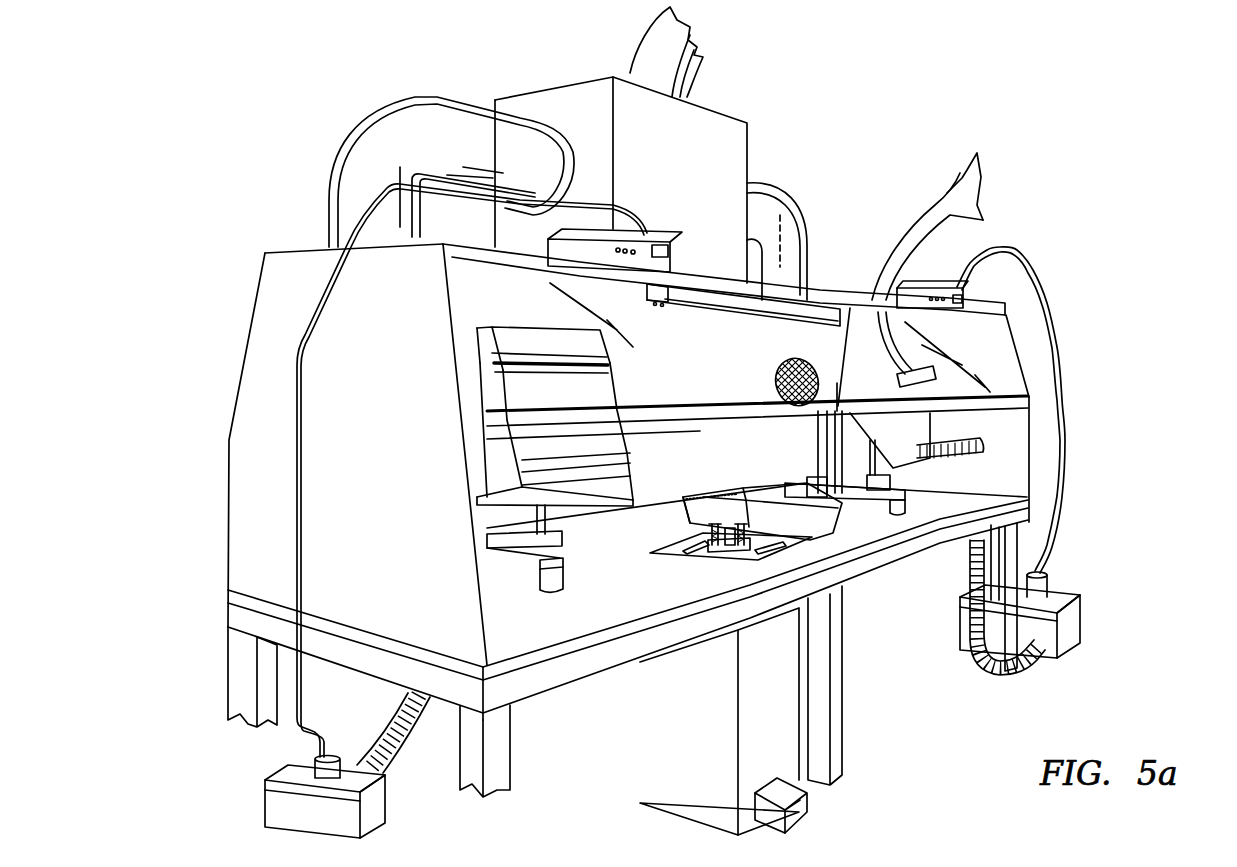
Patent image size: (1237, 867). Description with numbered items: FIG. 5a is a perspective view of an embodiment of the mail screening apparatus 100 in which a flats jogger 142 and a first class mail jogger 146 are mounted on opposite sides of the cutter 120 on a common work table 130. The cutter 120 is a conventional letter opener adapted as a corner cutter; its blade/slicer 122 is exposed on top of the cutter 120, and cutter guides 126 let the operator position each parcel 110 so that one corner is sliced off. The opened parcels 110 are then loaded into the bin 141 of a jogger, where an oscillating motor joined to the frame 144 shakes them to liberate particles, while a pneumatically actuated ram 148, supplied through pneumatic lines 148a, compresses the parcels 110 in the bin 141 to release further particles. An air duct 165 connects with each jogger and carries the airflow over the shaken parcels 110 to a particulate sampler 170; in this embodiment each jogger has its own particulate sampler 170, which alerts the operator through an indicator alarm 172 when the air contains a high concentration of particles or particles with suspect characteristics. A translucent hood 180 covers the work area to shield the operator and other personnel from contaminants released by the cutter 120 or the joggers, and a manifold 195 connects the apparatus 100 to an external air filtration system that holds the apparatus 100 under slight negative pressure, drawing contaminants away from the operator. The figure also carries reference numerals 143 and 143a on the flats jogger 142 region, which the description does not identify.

The apparatus 100 is at (1067, 140).
The parcels 110 is at (730, 490).
The cutter 120 is at (680, 753).
The blade/slicer 122 is at (713, 553).
The cutter guides 126 is at (687, 542).
The work table 130 is at (538, 628).
The bin 141 is at (530, 325).
The flats jogger 142 is at (953, 457).
The laser enclosure cabinet 143 is at (527, 400).
The shelf 143a is at (490, 365).
The frame 144 is at (503, 568).
The first class mail jogger 146 is at (630, 390).
The ram 148 is at (933, 355).
The pneumatic lines 148a is at (978, 167).
The air duct 165 is at (390, 740).
The particulate sampler 170 is at (255, 797).
The indicator alarm 172 is at (658, 240).
The translucent hood 180 is at (1002, 345).
The manifold 195 is at (737, 107).